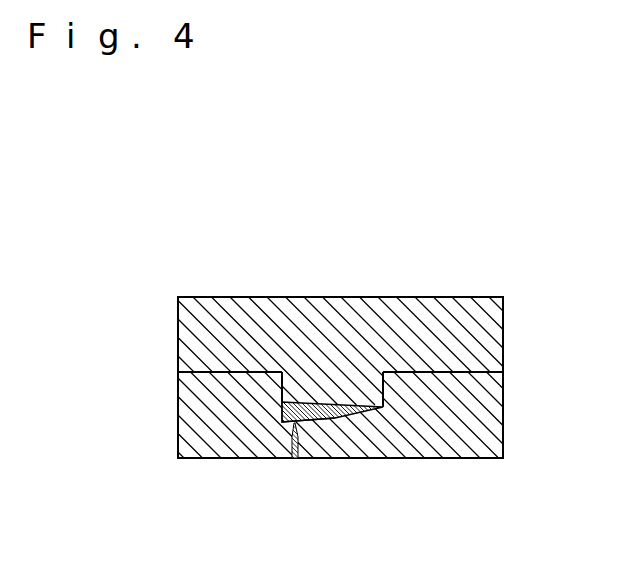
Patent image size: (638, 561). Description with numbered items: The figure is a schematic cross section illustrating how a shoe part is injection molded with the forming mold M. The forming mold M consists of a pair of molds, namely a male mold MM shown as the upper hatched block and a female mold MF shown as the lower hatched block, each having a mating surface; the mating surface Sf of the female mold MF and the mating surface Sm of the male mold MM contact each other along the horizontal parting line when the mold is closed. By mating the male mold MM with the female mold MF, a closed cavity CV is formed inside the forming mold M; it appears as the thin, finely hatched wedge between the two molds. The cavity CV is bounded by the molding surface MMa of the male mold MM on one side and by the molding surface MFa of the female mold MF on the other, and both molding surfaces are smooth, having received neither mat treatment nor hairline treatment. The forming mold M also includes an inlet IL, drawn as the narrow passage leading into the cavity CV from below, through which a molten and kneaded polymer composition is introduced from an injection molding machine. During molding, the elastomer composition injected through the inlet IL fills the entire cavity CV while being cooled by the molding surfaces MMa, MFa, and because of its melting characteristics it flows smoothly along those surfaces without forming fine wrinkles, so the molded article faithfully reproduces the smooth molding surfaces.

The forming mold M is at (242, 224).
The male mold MM is at (505, 337).
The female mold MF is at (505, 422).
The molding surface of the male mold MMa is at (337, 387).
The molding surface of the female mold MFa is at (290, 427).
The cavity CV is at (335, 418).
The inlet IL is at (294, 458).
The mating surface of the female mold Sf is at (425, 363).
The mating surface of the male mold Sm is at (441, 382).